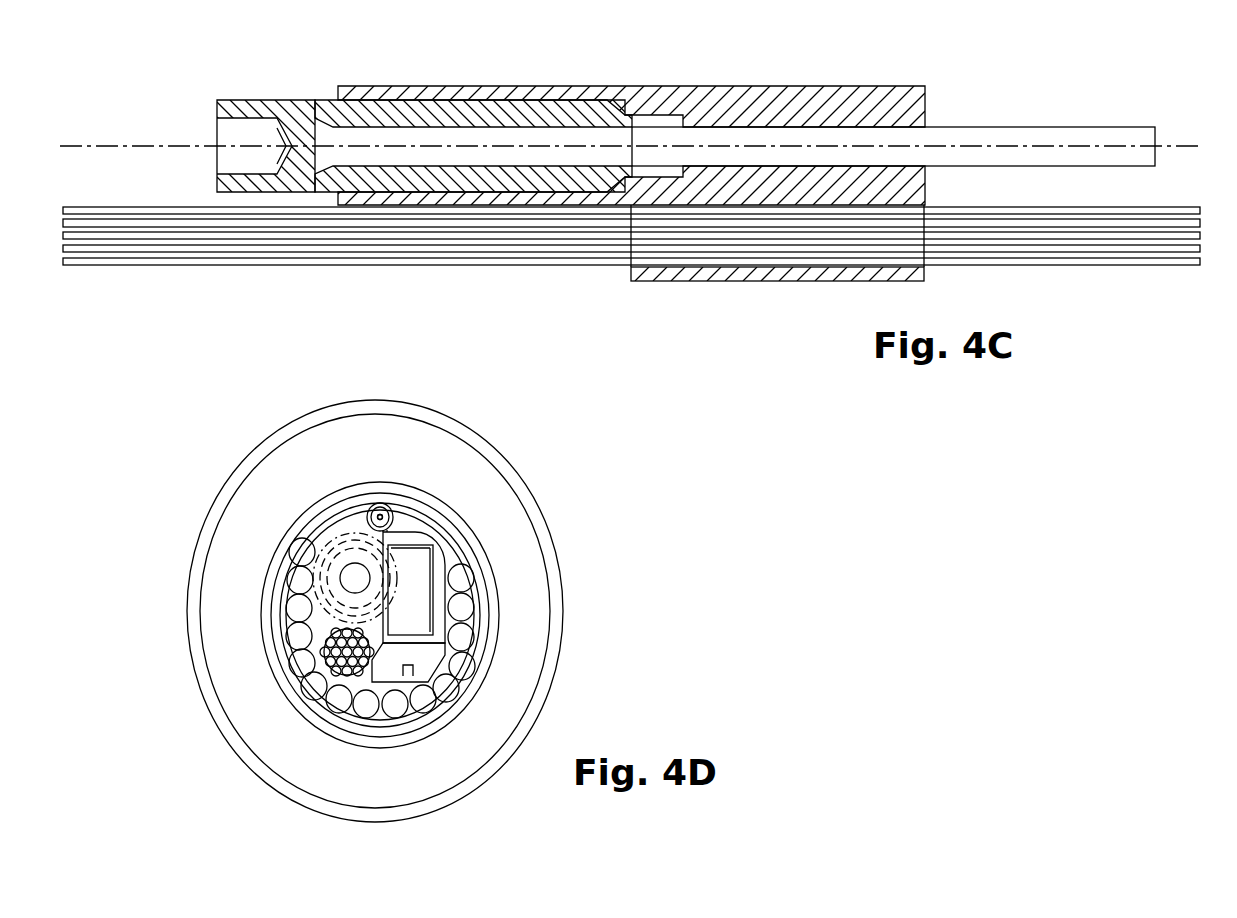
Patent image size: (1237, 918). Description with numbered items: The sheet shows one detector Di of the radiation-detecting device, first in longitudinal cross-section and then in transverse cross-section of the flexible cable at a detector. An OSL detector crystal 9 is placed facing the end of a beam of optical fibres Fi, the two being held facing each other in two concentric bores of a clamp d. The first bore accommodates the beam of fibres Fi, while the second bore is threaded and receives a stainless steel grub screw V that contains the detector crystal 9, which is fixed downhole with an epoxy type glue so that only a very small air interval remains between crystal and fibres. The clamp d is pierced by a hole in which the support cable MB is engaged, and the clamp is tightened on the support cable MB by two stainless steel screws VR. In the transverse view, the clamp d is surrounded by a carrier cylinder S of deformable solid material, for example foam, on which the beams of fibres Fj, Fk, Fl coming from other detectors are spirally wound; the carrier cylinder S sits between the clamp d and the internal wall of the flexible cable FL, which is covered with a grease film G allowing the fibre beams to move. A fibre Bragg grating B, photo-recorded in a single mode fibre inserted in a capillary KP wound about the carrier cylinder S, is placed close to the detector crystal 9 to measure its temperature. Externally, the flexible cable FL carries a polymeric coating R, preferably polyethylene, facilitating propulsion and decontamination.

In FIG. 4C, the grub screw V is at (298, 118).
In FIG. 4C, the OSL detector crystal 9 is at (422, 137).
In FIG. 4C, the clamp d is at (795, 103).
In FIG. 4D, the clamp d is at (286, 633).
In FIG. 4C, the beam of optical fibres Fi is at (1035, 135).
In FIG. 4D, the beam of optical fibres Fi is at (353, 572).
In FIG. 4C, the support cable MB is at (56, 203).
In FIG. 4D, the support cable MB is at (327, 652).
In FIG. 4C, the detector Di is at (596, 313).
In FIG. 4D, the polymeric coating R is at (385, 413).
In FIG. 4D, the flexible cable FL is at (430, 455).
In FIG. 4D, the grease film G is at (268, 573).
In FIG. 4D, the capillary KP is at (382, 503).
In FIG. 4D, the fibre Bragg grating B is at (377, 512).
In FIG. 4D, the carrier cylinder S is at (430, 532).
In FIG. 4D, the screws VR is at (390, 670).
In FIG. 4D, the beam of fibres Fj is at (463, 578).
In FIG. 4D, the beam of fibres Fk is at (462, 607).
In FIG. 4D, the beam of fibres Fl is at (462, 637).